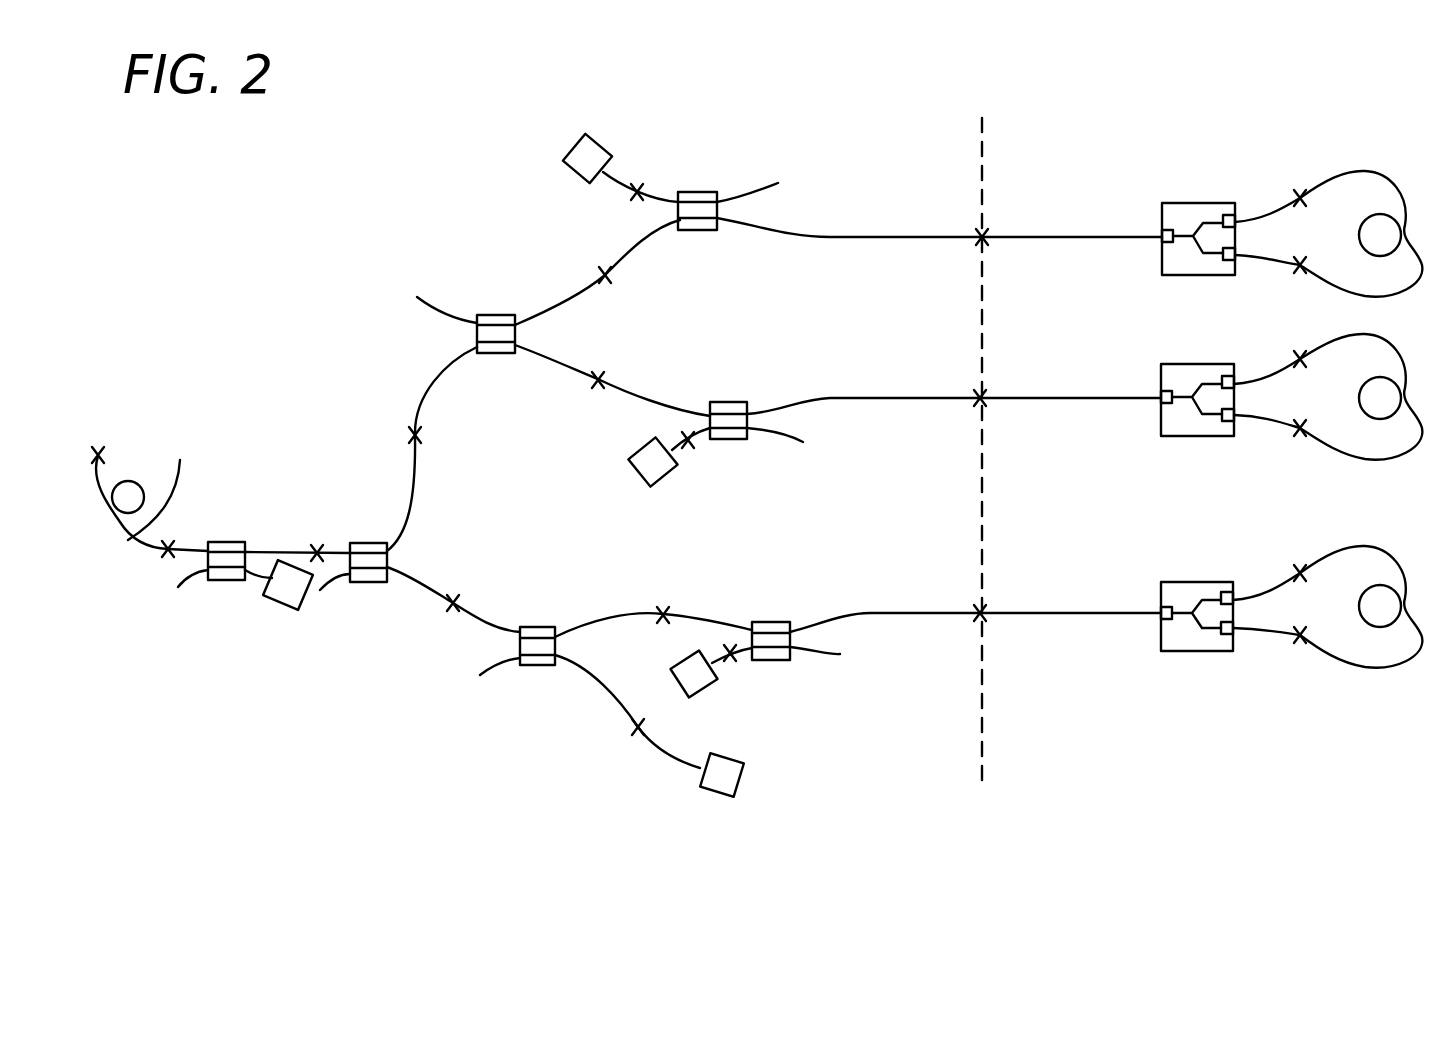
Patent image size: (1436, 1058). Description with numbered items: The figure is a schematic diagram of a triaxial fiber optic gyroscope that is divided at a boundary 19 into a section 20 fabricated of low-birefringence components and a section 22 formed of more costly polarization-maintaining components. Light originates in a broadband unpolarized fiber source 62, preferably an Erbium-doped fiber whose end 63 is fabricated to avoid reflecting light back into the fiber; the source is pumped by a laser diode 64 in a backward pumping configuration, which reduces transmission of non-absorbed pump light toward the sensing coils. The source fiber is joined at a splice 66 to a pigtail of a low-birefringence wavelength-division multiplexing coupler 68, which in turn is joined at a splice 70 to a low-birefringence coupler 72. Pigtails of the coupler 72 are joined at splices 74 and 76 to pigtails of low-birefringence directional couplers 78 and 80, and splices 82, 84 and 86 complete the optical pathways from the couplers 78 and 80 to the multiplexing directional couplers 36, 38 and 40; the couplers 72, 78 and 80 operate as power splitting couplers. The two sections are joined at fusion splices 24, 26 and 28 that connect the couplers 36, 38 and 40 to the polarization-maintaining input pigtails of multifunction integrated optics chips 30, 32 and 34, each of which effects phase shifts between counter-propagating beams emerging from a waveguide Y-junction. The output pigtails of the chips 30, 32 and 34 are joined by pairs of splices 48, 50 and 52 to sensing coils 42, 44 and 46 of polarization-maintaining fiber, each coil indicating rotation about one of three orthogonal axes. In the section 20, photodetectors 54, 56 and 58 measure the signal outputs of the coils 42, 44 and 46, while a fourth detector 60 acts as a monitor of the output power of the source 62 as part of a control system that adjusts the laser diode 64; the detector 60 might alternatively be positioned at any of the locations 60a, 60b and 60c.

The division 19 is at (980, 773).
The section of low-birefringence components 20 is at (783, 122).
The section of PM components 22 is at (1068, 122).
The fusion splice 24 is at (988, 233).
The fusion splice 26 is at (987, 403).
The fusion splice 28 is at (987, 617).
The multifunction integrated optics chip 30 is at (1180, 203).
The multifunction integrated optics chip 32 is at (1161, 370).
The multifunction integrated optics chip 34 is at (1177, 652).
The multiplexing directional coupler 36 is at (692, 192).
The multiplexing directional coupler 38 is at (727, 402).
The multiplexing directional coupler 40 is at (777, 620).
The sensing coil 42 is at (1363, 172).
The sensing coil 44 is at (1358, 457).
The sensing coil 46 is at (1377, 672).
The pair of splices 48 is at (1294, 190).
The pair of splices 50 is at (1300, 352).
The pair of splices 52 is at (1300, 568).
The photodetector 54 is at (567, 172).
The photodetector 56 is at (637, 481).
The photodetector 58 is at (690, 696).
The monitor detector 60 is at (710, 798).
The alternative detector location 60a is at (785, 187).
The alternative detector location 60b is at (813, 443).
The alternative detector location 60c is at (856, 658).
The broadband unpolarized fiber source 62 is at (152, 485).
The fiber end 63 is at (104, 455).
The laser diode 64 is at (283, 606).
The splice 66 is at (166, 558).
The wavelength-division multiplexing coupler 68 is at (227, 542).
The splice 70 is at (317, 547).
The low-birefringence coupler 72 is at (367, 584).
The splice 74 is at (423, 433).
The splice 76 is at (456, 598).
The directional coupler 78 is at (497, 315).
The directional coupler 80 is at (537, 666).
The splice 82 is at (610, 278).
The splice 84 is at (598, 373).
The splice 86 is at (664, 610).